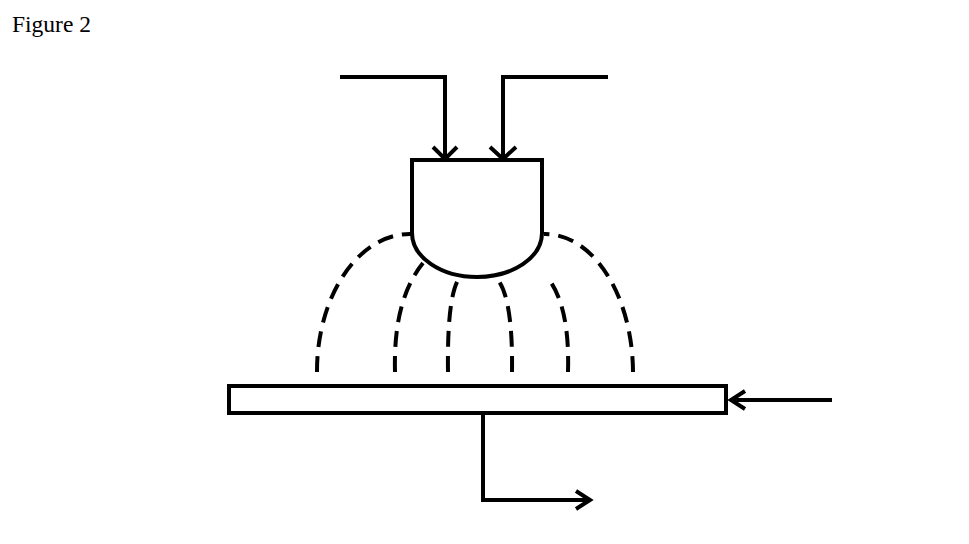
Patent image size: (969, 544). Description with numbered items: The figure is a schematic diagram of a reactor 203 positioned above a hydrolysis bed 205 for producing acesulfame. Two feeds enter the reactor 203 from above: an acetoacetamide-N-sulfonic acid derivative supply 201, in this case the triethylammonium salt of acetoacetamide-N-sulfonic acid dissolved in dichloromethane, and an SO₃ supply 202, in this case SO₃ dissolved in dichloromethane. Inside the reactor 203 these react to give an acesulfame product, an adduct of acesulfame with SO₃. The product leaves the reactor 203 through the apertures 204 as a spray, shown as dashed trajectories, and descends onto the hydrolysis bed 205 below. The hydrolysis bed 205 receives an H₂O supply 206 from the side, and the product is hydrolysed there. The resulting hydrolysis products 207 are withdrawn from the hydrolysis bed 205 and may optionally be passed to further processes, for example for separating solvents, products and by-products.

The acetoacetamide-N-sulfonic acid derivative supply 201 is at (339, 115).
The SO₃ supply 202 is at (605, 113).
The reactor 203 is at (427, 193).
The apertures 204 is at (545, 223).
The hydrolysis bed 205 is at (680, 402).
The H₂O supply 206 is at (826, 406).
The hydrolysis products 207 is at (575, 466).